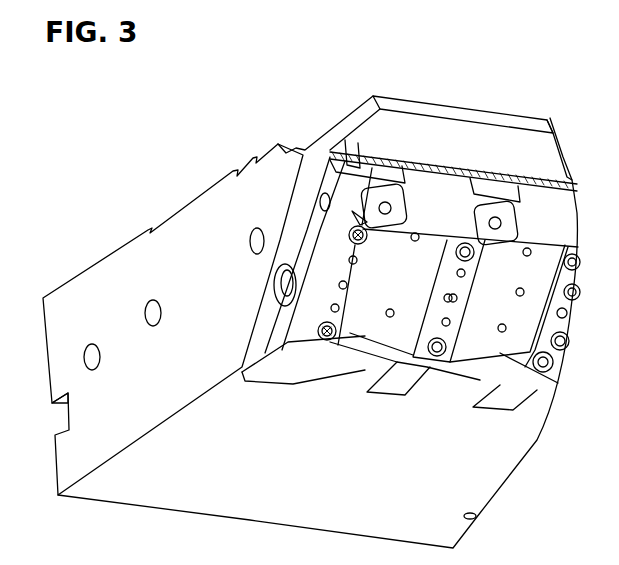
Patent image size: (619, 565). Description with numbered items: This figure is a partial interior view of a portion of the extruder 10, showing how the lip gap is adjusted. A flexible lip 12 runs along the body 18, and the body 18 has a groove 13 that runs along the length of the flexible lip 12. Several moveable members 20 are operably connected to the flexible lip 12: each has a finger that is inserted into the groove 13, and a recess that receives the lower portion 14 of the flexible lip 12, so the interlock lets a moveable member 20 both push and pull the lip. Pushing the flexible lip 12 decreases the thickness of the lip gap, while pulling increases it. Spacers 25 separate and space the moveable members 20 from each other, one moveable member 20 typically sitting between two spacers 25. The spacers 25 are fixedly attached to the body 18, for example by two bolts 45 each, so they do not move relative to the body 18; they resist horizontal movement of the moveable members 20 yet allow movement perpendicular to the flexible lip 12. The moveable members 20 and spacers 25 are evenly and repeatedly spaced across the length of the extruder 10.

The extruder 10 is at (83, 200).
The flexible lip 12 is at (418, 106).
The groove 13 is at (350, 150).
The lower portion of the flexible lip 14 is at (372, 168).
The body 18 is at (188, 243).
The moveable member 20 is at (433, 255).
The spacer 25 is at (288, 358).
The bolt 45 is at (366, 240).